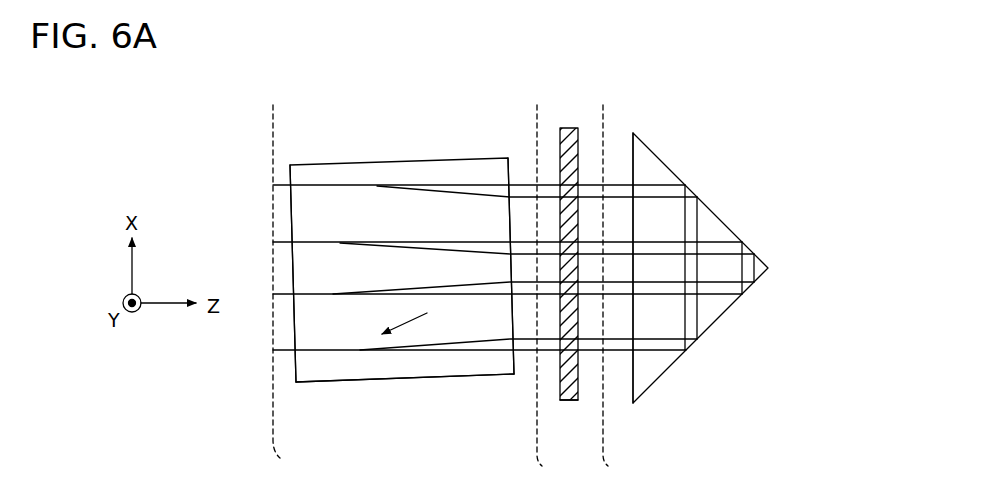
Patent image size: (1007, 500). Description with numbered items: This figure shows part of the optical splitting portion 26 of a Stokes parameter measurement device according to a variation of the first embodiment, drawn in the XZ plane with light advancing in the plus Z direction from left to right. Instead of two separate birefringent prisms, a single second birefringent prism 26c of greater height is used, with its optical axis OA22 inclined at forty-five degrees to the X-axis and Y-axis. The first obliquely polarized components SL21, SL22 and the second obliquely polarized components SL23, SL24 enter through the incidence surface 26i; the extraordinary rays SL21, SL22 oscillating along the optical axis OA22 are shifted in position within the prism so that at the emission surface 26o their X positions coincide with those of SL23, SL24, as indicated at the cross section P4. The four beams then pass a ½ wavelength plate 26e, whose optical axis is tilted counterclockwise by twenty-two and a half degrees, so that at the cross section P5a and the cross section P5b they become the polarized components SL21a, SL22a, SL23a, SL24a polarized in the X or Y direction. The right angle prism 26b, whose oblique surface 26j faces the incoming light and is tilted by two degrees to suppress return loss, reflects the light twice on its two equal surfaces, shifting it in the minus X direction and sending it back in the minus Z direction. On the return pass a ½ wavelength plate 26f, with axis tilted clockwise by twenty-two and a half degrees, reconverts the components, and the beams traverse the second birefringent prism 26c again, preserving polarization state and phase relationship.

The optical splitting portion 26 is at (414, 396).
The right angle prism 26b is at (717, 217).
The second birefringent prism 26c is at (328, 380).
The ½ wavelength plate 26e is at (568, 128).
The ½ wavelength plate 26f is at (568, 402).
The incidence surface 26i is at (517, 376).
The oblique surface 26j is at (633, 403).
The emission surface 26o is at (295, 382).
The optical axis OA22 is at (378, 376).
The cross section P4 is at (279, 298).
The cross section P5a is at (544, 298).
The cross section P5b is at (611, 298).
The first obliquely polarized component SL21 is at (440, 189).
The first obliquely polarized component SL22 is at (467, 241).
The second obliquely polarized component SL23 is at (492, 186).
The second obliquely polarized component SL24 is at (383, 241).
The polarized component SL21a is at (623, 197).
The polarized component SL22a is at (613, 255).
The polarized component SL23a is at (613, 183).
The polarized component SL24a is at (607, 240).